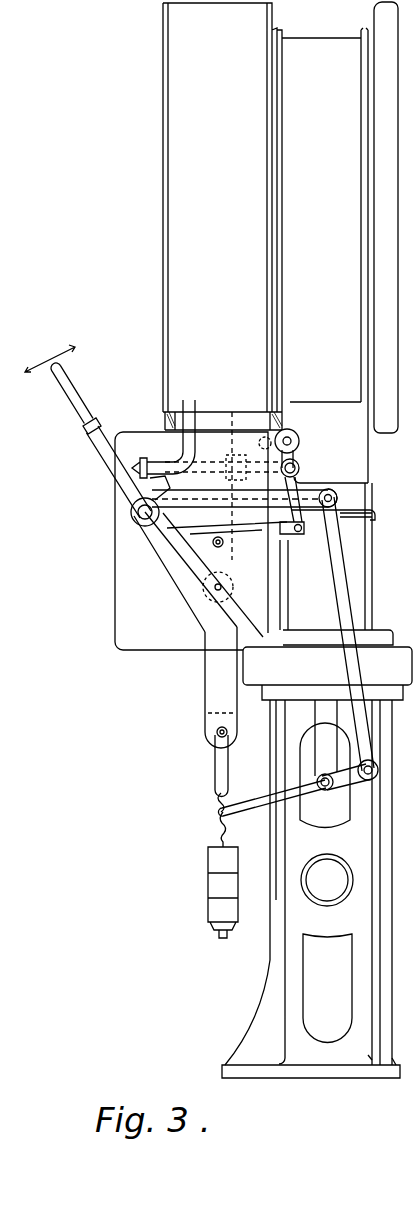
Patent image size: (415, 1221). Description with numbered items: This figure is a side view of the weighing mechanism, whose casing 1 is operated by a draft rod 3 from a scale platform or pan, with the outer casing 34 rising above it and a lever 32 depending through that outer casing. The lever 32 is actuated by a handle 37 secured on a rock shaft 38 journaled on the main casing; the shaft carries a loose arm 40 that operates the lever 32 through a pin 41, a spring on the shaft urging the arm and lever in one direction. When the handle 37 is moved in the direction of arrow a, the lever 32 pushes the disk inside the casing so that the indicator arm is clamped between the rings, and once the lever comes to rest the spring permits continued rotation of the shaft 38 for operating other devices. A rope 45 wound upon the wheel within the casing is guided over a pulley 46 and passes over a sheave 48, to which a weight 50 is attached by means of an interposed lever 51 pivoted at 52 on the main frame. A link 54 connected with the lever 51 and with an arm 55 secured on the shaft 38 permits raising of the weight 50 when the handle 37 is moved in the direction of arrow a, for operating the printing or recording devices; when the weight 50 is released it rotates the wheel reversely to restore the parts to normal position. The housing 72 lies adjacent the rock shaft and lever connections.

The outer casing 34 is at (222, 216).
The casing 1 is at (340, 242).
The lever 32 is at (188, 425).
The pin 41 is at (140, 458).
The handle 37 is at (105, 456).
The arrow a is at (50, 347).
The loose arm 40 is at (135, 496).
The rock shaft 38 is at (135, 524).
The pulley 46 is at (232, 484).
The arm 55 is at (318, 496).
The housing 72 is at (198, 531).
The link 54 is at (343, 604).
The rope 45 is at (205, 694).
The sheave 48 is at (215, 733).
The lever 51 is at (262, 805).
The pivot 52 is at (345, 764).
The weight 50 is at (215, 879).
The draft rod 3 is at (318, 780).